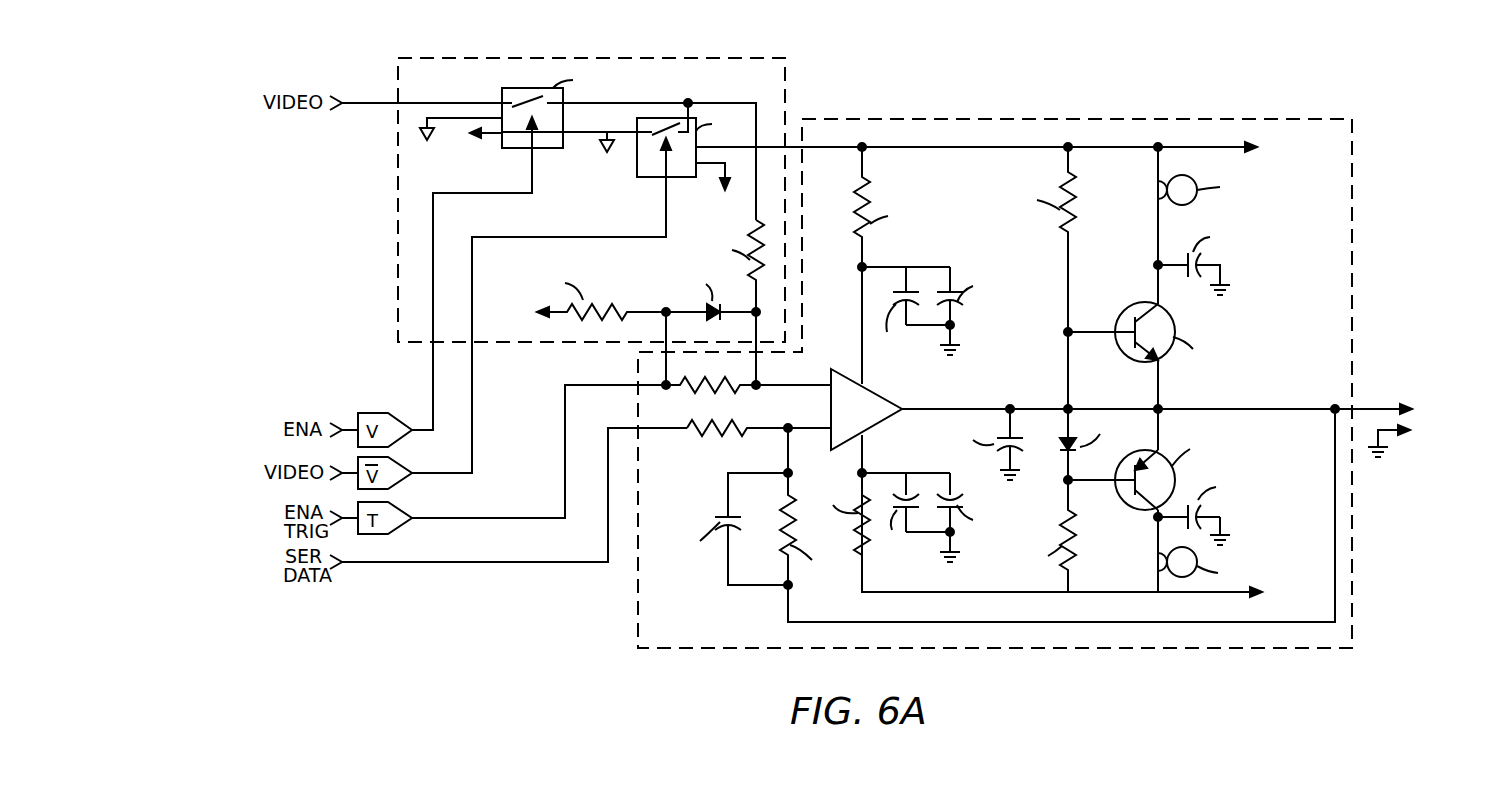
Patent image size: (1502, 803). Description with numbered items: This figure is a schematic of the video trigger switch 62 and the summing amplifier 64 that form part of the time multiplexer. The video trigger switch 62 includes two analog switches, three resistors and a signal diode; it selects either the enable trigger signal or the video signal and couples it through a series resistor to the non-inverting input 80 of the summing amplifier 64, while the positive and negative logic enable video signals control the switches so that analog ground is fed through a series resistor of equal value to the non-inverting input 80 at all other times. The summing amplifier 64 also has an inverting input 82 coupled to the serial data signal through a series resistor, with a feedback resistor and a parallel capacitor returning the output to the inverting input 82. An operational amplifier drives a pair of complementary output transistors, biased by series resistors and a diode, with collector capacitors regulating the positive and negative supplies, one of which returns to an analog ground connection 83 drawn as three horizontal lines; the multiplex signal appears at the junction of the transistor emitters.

The video trigger switch 62 is at (708, 57).
The summing amplifier 64 is at (997, 117).
The non-inverting input 80 is at (807, 383).
The inverting input 82 is at (809, 432).
The analog ground connection 83 is at (1220, 516).